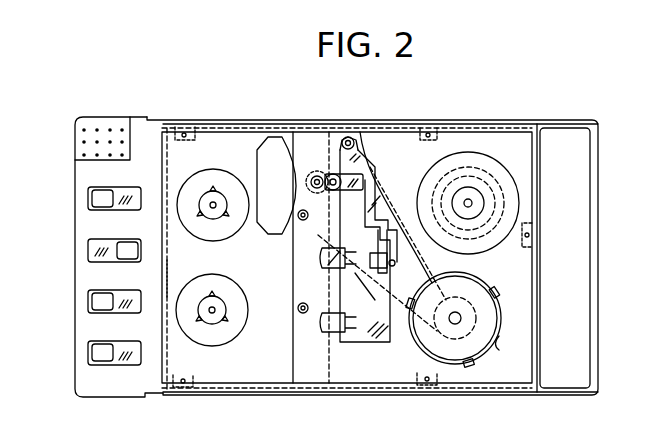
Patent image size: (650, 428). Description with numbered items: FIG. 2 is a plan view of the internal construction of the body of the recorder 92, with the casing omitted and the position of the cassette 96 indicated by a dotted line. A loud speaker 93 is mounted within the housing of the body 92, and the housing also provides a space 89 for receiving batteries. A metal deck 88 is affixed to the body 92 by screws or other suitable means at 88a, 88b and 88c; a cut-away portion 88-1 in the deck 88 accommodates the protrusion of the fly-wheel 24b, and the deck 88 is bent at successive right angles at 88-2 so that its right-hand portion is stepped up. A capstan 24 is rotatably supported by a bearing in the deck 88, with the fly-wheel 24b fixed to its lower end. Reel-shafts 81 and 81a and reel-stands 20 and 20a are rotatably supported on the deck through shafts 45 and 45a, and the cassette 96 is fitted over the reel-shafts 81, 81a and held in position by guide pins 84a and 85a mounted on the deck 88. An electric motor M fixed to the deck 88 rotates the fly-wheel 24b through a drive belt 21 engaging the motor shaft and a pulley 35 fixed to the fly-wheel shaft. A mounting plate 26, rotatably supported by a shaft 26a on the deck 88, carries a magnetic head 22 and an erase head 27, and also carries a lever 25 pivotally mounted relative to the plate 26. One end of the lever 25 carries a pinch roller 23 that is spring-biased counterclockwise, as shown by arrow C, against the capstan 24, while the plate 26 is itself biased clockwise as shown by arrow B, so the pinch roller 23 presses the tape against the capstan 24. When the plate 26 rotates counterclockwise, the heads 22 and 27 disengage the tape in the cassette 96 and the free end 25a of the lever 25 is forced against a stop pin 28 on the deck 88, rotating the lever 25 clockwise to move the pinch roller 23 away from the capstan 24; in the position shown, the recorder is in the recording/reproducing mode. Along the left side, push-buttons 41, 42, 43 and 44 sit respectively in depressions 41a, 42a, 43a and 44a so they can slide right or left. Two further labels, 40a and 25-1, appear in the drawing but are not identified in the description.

The speaker grille 40a is at (132, 135).
The push-button 41 is at (88, 198).
The depression 41a is at (127, 188).
The push-button 42 is at (88, 251).
The depression 42a is at (113, 238).
The push-button 43 is at (88, 300).
The depression 43a is at (116, 291).
The push-button 44 is at (88, 354).
The depression 44a is at (118, 343).
The shaft 45 is at (208, 204).
The shaft 45a is at (207, 311).
The reel-stand 20 is at (220, 190).
The reel-stand 20a is at (238, 282).
The reel-shaft 81 is at (204, 200).
The reel-shaft 81a is at (213, 326).
The cassette 96 is at (168, 278).
The metal deck 88 is at (340, 384).
The cut-away portion 88-1 is at (258, 147).
The bent portion of deck 88-2 is at (292, 354).
The screw attachment point 88a is at (202, 126).
The screw attachment point 88b is at (440, 132).
The screw attachment point 88c is at (529, 228).
The battery space 89 is at (585, 265).
The recorder body 92 is at (455, 388).
The loud speaker 93 is at (485, 154).
The guide pin 84a is at (297, 222).
The guide pin 85a is at (297, 312).
The magnetic head 22 is at (320, 257).
The erase head 27 is at (323, 332).
The capstan 24 is at (312, 180).
The fly-wheel 24b is at (281, 147).
The pinch roller 23 is at (364, 160).
The drive belt 21 is at (371, 186).
The lever 25 is at (378, 200).
The lever pin 25-1 is at (395, 264).
The free end of lever 25a is at (361, 291).
The mounting plate 26 is at (366, 342).
The shaft 26a is at (347, 137).
The stop pin 28 is at (448, 314).
The pulley 35 is at (488, 264).
The electric motor M is at (502, 337).
The arrow B is at (375, 135).
The arrow C is at (373, 275).